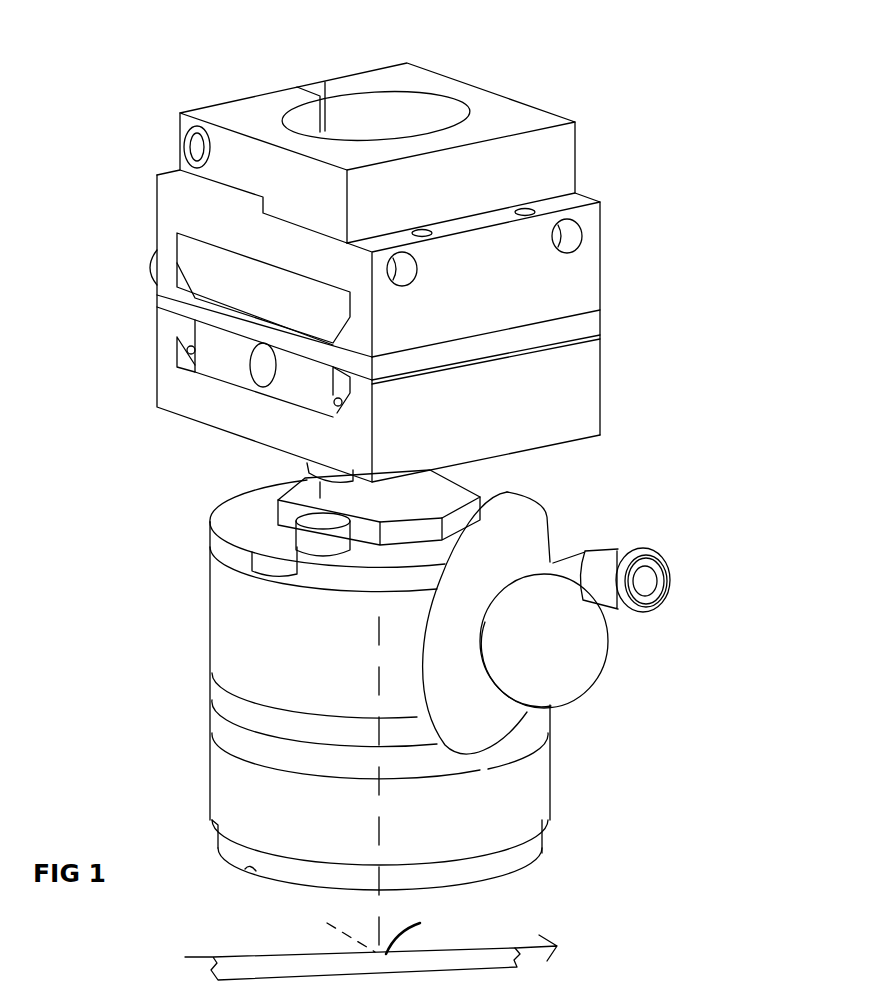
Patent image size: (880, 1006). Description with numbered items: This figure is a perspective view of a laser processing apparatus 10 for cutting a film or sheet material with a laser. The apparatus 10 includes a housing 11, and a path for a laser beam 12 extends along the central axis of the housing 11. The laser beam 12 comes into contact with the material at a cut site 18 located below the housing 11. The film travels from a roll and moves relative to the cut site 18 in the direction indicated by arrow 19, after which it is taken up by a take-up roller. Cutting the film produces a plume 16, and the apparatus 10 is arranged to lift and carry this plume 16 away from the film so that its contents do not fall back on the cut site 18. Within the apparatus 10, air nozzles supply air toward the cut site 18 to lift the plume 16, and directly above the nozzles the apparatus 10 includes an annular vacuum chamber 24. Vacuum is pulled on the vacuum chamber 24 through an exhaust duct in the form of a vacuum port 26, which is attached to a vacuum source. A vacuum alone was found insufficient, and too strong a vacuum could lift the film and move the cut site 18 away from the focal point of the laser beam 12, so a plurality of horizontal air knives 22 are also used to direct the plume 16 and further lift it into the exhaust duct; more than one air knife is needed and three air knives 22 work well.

The laser processing apparatus 10 is at (607, 133).
The housing 11 is at (603, 288).
The laser beam 12 is at (376, 806).
The plume 16 is at (332, 927).
The cut site 18 is at (420, 928).
The arrow 19 is at (352, 957).
The horizontal air knives 22 is at (552, 778).
The annular vacuum chamber 24 is at (548, 510).
The vacuum port 26 is at (608, 658).